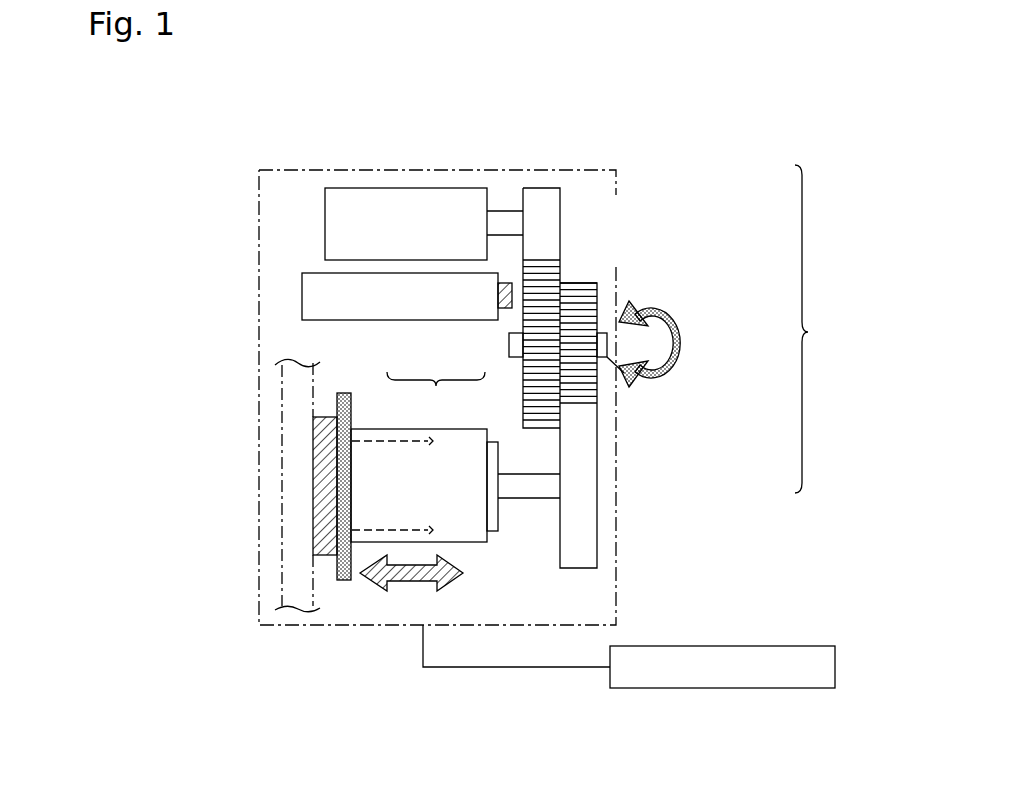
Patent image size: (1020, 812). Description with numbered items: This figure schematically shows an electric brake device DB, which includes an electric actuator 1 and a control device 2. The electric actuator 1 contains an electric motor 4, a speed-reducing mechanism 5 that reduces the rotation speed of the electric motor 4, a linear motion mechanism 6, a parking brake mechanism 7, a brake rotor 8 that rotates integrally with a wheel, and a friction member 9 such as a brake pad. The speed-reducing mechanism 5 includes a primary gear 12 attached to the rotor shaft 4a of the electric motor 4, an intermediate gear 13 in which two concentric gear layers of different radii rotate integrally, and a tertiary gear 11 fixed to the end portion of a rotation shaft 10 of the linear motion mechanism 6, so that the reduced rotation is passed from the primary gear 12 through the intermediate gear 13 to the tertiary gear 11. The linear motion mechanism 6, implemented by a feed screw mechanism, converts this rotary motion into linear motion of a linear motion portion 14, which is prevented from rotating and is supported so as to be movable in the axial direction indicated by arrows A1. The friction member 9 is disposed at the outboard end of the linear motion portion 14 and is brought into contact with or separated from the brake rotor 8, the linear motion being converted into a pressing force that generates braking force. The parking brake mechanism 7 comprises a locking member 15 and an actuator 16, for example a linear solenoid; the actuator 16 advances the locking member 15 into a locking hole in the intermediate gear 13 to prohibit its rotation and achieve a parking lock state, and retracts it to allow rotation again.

The electric actuator 1 is at (258, 237).
The electric brake device DB is at (198, 258).
The control device 2 is at (694, 646).
The electric motor 4 is at (392, 192).
The rotor shaft 4a is at (502, 218).
The speed-reducing mechanism 5 is at (811, 329).
The linear motion mechanism 6 is at (470, 537).
The parking brake mechanism 7 is at (436, 393).
The brake rotor 8 is at (292, 388).
The friction member 9 is at (312, 557).
The rotation shaft 10 is at (533, 488).
The tertiary gear 11 is at (590, 470).
The primary gear 12 is at (550, 195).
The intermediate gear 13 is at (605, 388).
The linear motion portion 14 is at (372, 443).
The locking member 15 is at (500, 318).
The actuator 16 is at (406, 322).
The axial direction arrows A1 is at (457, 578).